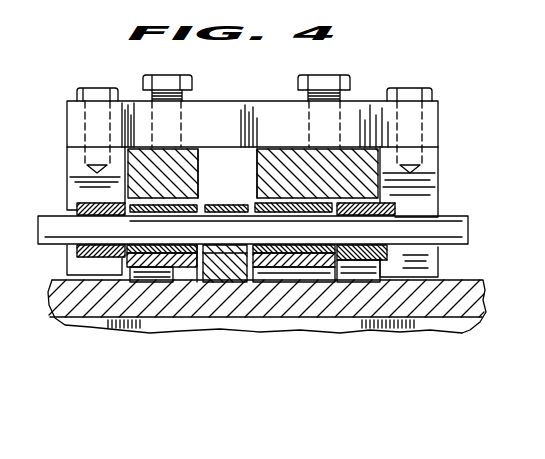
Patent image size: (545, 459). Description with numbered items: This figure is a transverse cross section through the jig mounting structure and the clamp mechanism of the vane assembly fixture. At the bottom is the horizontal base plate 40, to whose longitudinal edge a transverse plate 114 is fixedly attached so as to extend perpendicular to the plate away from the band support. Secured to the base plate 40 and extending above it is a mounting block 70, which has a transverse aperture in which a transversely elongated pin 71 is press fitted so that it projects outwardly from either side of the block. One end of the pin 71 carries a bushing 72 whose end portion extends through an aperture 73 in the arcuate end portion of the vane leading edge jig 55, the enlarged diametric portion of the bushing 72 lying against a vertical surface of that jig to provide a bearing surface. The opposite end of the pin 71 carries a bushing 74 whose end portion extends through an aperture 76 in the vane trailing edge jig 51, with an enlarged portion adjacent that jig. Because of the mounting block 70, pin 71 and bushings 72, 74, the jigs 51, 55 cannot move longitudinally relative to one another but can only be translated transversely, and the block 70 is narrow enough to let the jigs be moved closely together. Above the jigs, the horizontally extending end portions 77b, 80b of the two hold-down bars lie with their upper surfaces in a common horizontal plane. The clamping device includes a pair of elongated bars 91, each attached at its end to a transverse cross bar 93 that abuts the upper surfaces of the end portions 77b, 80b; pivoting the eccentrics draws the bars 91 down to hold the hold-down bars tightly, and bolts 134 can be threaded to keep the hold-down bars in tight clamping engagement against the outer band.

The base plate 40 is at (469, 283).
The vane trailing edge jig 51 is at (305, 263).
The vane leading edge jig 55 is at (192, 263).
The mounting block 70 is at (225, 206).
The pin 71 is at (462, 228).
The bushing 72 is at (77, 210).
The aperture 73 is at (122, 260).
The bushing 74 is at (399, 212).
The aperture 76 is at (286, 172).
The end portion of hold-down bar 77b is at (185, 152).
The end portion of hold-down bar 80b is at (274, 207).
The elongated bar 91 is at (72, 162).
The transverse cross bar 93 is at (78, 122).
The transverse plate 114 is at (464, 332).
The bolt 134 is at (345, 78).